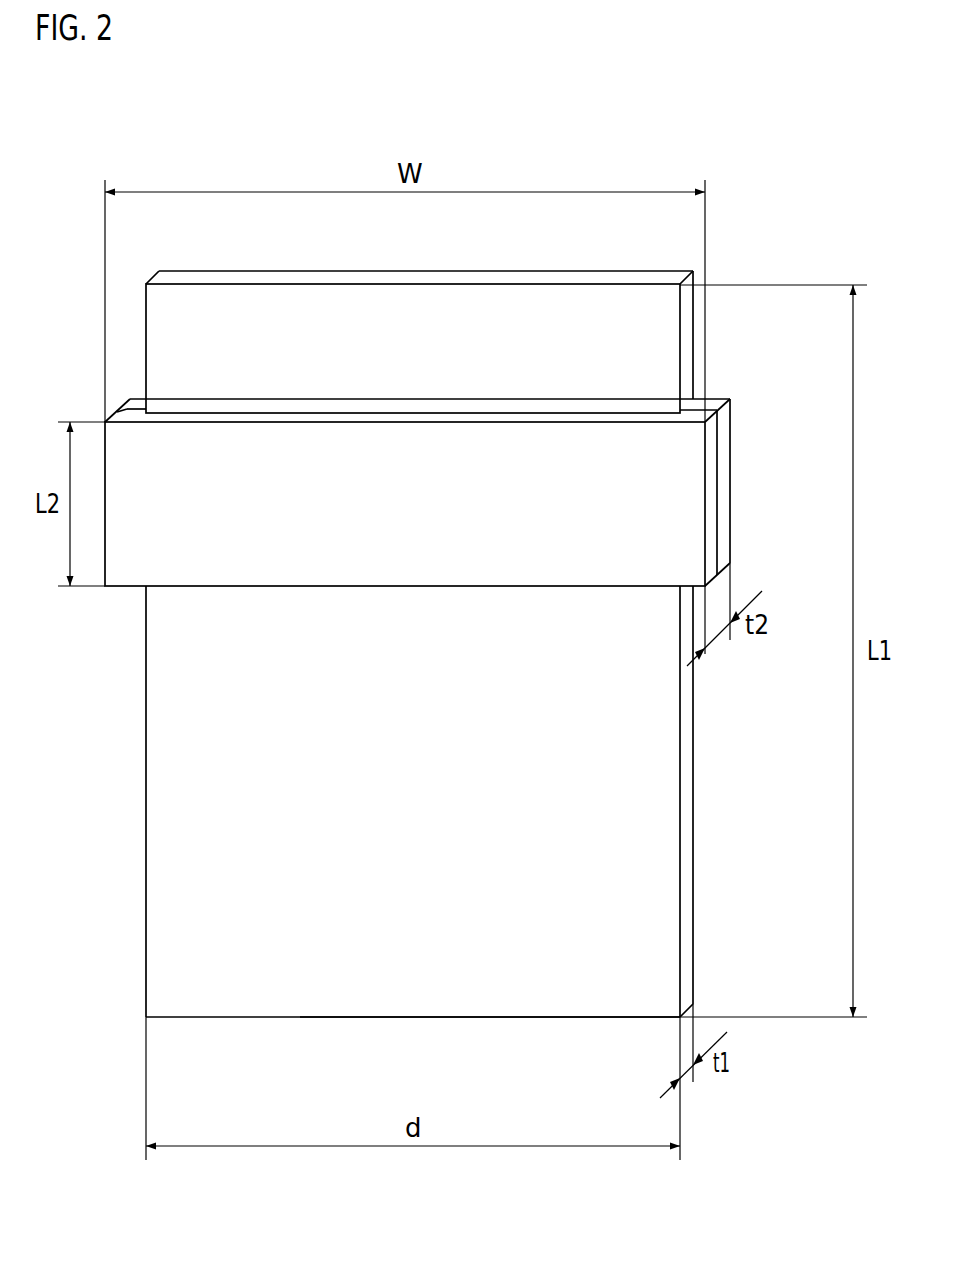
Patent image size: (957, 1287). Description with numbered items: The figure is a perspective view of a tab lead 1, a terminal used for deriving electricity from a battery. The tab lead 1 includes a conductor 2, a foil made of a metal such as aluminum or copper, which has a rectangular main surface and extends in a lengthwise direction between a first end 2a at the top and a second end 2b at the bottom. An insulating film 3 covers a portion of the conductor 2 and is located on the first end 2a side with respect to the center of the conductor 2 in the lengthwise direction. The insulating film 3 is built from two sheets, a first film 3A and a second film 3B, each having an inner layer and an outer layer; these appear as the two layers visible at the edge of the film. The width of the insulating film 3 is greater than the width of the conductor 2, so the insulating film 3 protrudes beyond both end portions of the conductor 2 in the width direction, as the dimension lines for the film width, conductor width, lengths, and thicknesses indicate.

The tab lead 1 is at (100, 137).
The conductor 2 is at (655, 851).
The first end 2a is at (597, 282).
The second end 2b is at (488, 1020).
The insulating film 3 is at (473, 492).
The first film 3A is at (802, 447).
The second film 3B is at (731, 463).